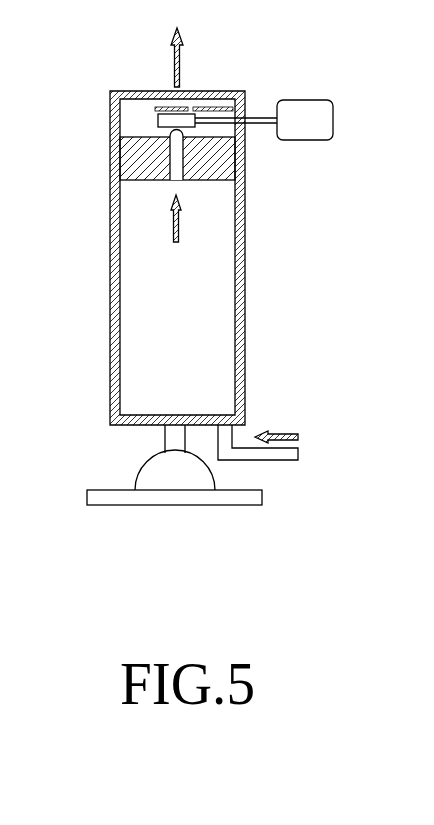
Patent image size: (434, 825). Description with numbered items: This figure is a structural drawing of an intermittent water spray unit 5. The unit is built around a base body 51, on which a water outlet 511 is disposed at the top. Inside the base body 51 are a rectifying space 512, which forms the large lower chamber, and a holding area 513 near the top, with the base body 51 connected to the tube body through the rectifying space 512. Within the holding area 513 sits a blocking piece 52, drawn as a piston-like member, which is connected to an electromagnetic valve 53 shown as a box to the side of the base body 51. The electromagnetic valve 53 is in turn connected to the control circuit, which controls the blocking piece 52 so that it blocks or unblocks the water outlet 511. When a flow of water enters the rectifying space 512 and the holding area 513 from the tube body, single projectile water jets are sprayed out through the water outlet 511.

The intermittent water spray unit 5 is at (247, 313).
The base body 51 is at (245, 245).
The water outlet 511 is at (168, 86).
The rectifying space 512 is at (130, 280).
The holding area 513 is at (112, 93).
The blocking piece 52 is at (158, 118).
The electromagnetic valve 53 is at (305, 103).